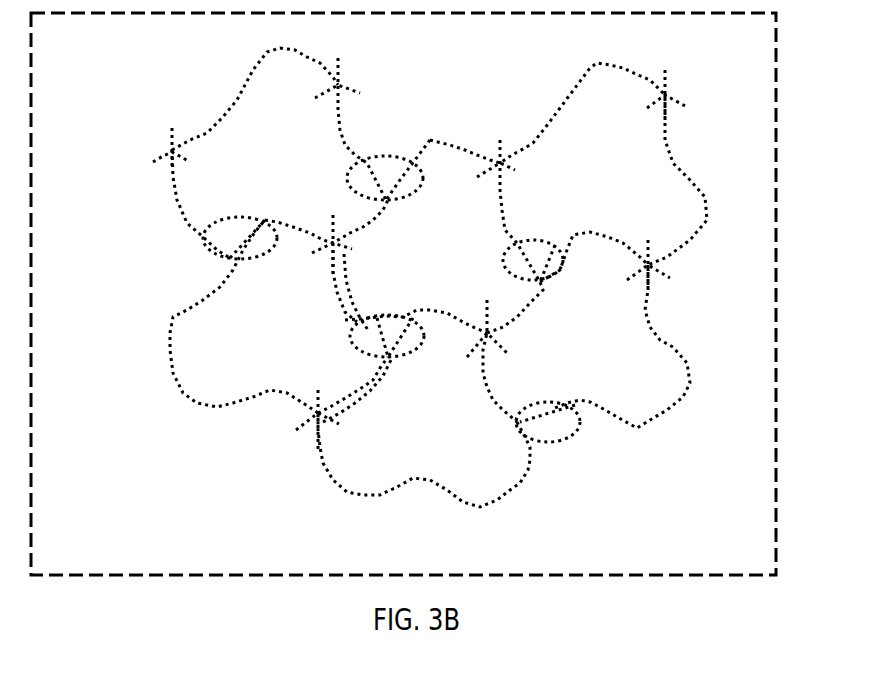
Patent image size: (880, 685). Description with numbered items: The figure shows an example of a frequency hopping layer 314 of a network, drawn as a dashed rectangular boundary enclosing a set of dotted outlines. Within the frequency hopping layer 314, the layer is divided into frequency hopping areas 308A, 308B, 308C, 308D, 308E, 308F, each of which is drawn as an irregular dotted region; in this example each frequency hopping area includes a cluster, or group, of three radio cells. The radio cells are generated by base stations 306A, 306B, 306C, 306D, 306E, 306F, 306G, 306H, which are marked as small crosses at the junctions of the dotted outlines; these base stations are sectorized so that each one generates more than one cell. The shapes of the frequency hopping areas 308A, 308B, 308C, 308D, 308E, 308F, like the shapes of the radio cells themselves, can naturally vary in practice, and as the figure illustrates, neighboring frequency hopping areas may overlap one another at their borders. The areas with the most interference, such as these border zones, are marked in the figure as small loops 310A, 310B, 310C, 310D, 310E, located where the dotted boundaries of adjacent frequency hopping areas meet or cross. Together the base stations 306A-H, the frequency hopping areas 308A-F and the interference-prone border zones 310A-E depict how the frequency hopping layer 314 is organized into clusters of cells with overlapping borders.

The base station 306A is at (150, 166).
The base station 306B is at (364, 95).
The base station 306C is at (521, 175).
The base station 306D is at (694, 107).
The base station 306E is at (674, 280).
The base station 306F is at (511, 357).
The base station 306G is at (354, 253).
The base station 306H is at (344, 432).
The frequency hopping area 308A is at (244, 82).
The frequency hopping area 308B is at (428, 142).
The frequency hopping area 308C is at (708, 190).
The frequency hopping area 308D is at (694, 388).
The frequency hopping area 308E is at (507, 494).
The frequency hopping area 308F is at (170, 350).
The border zone 310A is at (211, 253).
The border zone 310B is at (404, 197).
The border zone 310C is at (571, 278).
The border zone 310D is at (574, 439).
The border zone 310E is at (408, 354).
The frequency hopping layer 314 is at (778, 518).